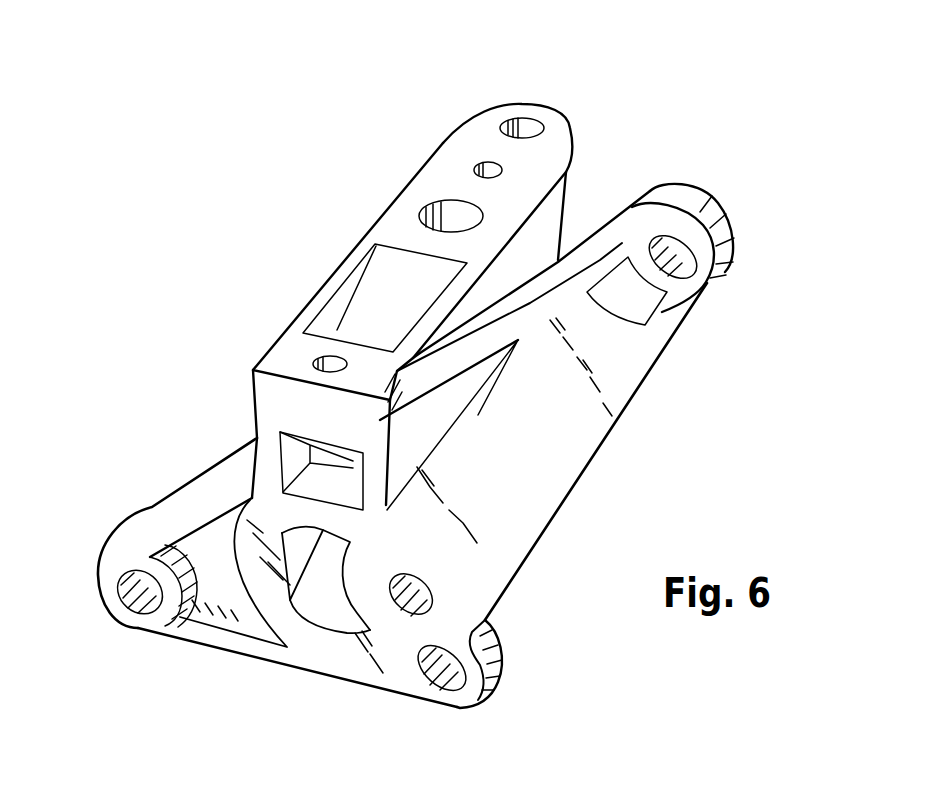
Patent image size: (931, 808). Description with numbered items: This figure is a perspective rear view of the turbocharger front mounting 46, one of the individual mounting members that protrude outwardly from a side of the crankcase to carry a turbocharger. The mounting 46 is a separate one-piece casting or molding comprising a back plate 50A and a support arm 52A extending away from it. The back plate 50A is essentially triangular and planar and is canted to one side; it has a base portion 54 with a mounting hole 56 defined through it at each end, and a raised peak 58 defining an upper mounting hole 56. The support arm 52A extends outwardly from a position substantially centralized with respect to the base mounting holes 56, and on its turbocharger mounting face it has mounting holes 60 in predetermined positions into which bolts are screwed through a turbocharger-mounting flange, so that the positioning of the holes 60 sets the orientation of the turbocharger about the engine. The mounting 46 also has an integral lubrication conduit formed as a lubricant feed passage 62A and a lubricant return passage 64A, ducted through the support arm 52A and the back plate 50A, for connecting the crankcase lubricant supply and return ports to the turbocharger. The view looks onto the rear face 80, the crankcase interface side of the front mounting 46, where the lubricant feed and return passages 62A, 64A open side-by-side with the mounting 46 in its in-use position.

The turbocharger front mounting 46 is at (304, 268).
The back plate 50A is at (180, 493).
The support arm 52A is at (547, 224).
The base portion 54 is at (227, 643).
The mounting hole 56 is at (683, 262).
The raised peak 58 is at (580, 473).
The mounting holes 60 is at (527, 124).
The lubricant feed passage 62A is at (488, 160).
The lubricant return passage 64A is at (457, 210).
The rear face 80 is at (565, 427).